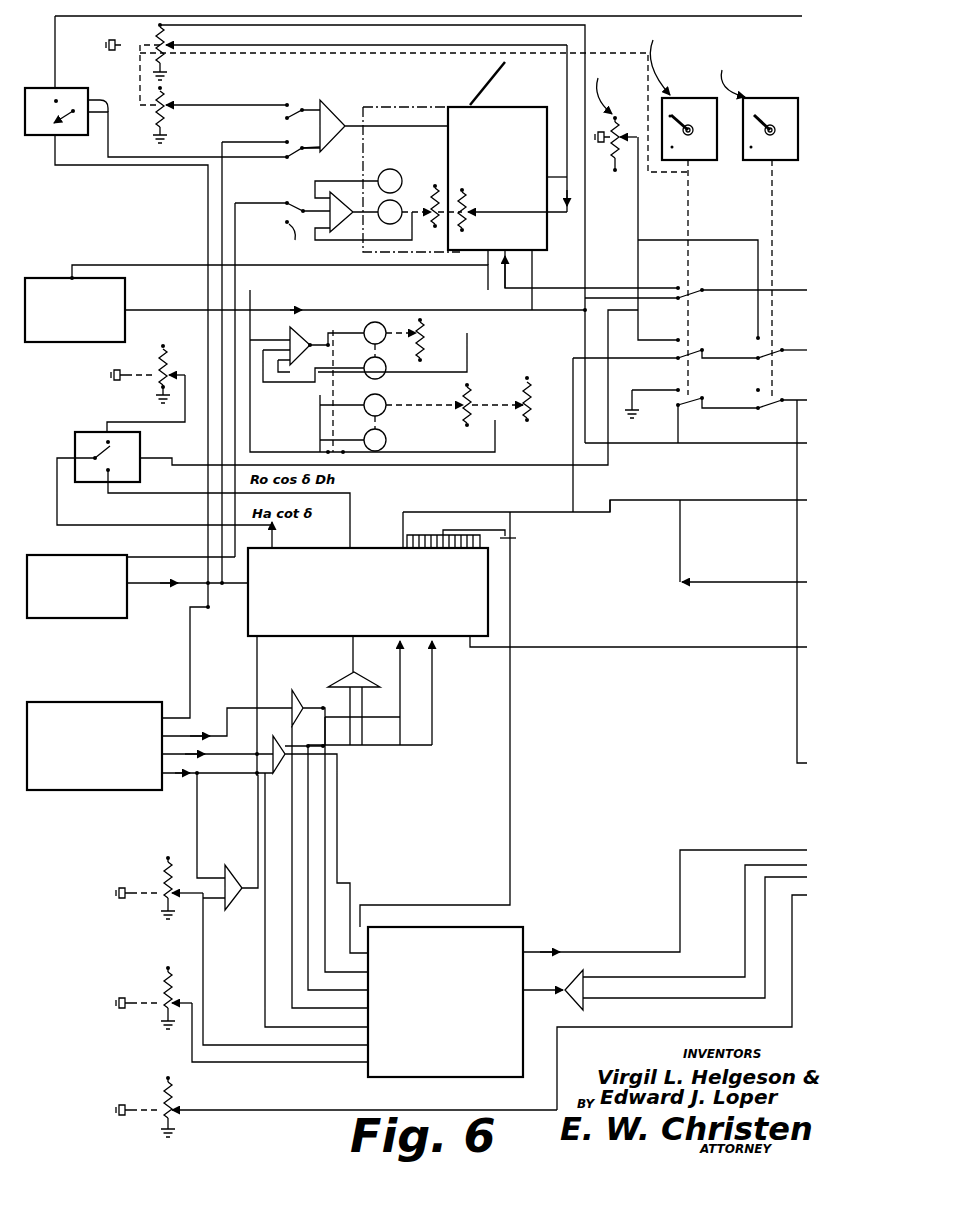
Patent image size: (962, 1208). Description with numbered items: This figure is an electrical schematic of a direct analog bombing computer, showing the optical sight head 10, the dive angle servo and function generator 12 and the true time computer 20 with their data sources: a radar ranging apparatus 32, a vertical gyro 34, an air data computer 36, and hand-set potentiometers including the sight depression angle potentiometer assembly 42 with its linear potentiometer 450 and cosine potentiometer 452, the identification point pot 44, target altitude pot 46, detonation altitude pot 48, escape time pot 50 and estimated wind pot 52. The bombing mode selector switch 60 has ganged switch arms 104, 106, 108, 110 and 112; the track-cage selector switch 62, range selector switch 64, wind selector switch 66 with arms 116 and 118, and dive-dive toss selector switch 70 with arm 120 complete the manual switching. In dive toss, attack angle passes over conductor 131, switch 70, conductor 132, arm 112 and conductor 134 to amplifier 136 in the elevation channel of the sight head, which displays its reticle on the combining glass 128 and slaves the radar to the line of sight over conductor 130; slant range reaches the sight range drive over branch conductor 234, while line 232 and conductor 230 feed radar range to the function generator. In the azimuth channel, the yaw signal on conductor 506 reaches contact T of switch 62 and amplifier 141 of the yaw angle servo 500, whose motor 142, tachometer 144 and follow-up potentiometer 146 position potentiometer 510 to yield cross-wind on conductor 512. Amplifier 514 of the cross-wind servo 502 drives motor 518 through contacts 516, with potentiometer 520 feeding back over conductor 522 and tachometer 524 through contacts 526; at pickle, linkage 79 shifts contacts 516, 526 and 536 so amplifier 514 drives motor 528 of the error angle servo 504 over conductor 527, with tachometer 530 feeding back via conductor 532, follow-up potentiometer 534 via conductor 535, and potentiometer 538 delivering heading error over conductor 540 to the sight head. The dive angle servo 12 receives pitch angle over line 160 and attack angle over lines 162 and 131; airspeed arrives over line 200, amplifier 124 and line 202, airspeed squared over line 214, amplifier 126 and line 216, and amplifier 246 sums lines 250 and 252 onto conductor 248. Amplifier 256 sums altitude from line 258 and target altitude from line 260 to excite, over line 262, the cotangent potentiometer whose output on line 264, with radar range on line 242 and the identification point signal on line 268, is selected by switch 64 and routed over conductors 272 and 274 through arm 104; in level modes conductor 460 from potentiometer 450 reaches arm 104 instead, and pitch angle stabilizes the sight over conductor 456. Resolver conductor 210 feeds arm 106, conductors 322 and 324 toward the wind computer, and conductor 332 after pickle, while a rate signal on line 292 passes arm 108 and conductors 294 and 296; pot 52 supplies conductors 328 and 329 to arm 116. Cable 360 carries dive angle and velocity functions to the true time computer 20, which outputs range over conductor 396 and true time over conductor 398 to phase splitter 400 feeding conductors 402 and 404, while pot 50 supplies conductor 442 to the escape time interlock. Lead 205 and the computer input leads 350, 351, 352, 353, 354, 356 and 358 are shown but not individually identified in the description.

The optical sight head 10 is at (512, 106).
The dive angle servo and function generator 12 is at (492, 588).
The true time computer 20 is at (516, 932).
The radar ranging apparatus 32 is at (114, 266).
The vertical gyro 34 is at (95, 620).
The air data computer 36 is at (116, 700).
The sight depression angle potentiometer assembly 42 is at (136, 85).
The identification point potentiometer 44 is at (168, 358).
The target altitude potentiometer 46 is at (156, 904).
The detonation altitude potentiometer 48 is at (159, 1013).
The escape time potentiometer 50 is at (159, 1123).
The estimated wind potentiometer 52 is at (612, 152).
The bombing mode selector switch 60 is at (697, 162).
The track-cage selector switch 62 is at (300, 240).
The range selector switch 64 is at (140, 450).
The wind selector switch 66 is at (776, 162).
The dive-dive toss selector switch 70 is at (100, 104).
The switch actuating linkage 79 is at (333, 438).
The switch arm 104 is at (688, 290).
The switch arm 106 is at (688, 342).
The switch arm 108 is at (694, 390).
The switch arm 110 is at (300, 102).
The switch arm 112 is at (300, 160).
The switch arm 116 is at (754, 386).
The switch arm 118 is at (770, 410).
The switch arm 120 is at (84, 141).
The phase inverter amplifier 124 is at (285, 688).
The phase inverter amplifier 126 is at (270, 738).
The combining glass 128 is at (490, 78).
The conductor 130 is at (430, 262).
The conductor 131 is at (140, 167).
The conductor 132 is at (150, 157).
The conductor 134 is at (322, 152).
The amplifier 136 is at (326, 100).
The summing and servo amplifier 141 is at (343, 222).
The reversible servo motor 142 is at (400, 204).
The tachometer generator 144 is at (392, 168).
The follow-up potentiometer 146 is at (440, 180).
The line 160 is at (138, 586).
The line 162 is at (210, 609).
The line 200 is at (242, 704).
The line 202 is at (417, 728).
The lead 205 is at (358, 264).
The conductor 210 is at (575, 478).
The line 214 is at (222, 756).
The line 216 is at (418, 748).
The conductor 230 is at (646, 647).
The line 232 is at (152, 304).
The branch conductor 234 is at (533, 291).
The line 242 is at (352, 508).
The summing amplifier 246 is at (378, 676).
The conductor 248 is at (355, 648).
The line 250 is at (328, 686).
The line 252 is at (368, 700).
The summing amplifier 256 is at (236, 905).
The line 258 is at (190, 780).
The line 260 is at (170, 938).
The line 262 is at (262, 640).
The line 264 is at (276, 528).
The line 268 is at (150, 420).
The conductor 272 is at (412, 458).
The conductor 274 is at (774, 291).
The line 292 is at (722, 582).
The conductor 294 is at (718, 420).
The conductor 296 is at (782, 400).
The conductor 322 is at (718, 356).
The conductor 324 is at (782, 350).
The conductor 328 is at (642, 200).
The conductor 329 is at (728, 240).
The conductor 332 is at (618, 498).
The lead 350 is at (350, 812).
The lead 351 is at (352, 786).
The lead 352 is at (335, 852).
The lead 353 is at (272, 975).
The lead 354 is at (272, 1002).
The lead 356 is at (206, 945).
The lead 358 is at (216, 1066).
The cable 360 is at (512, 727).
The conductor 396 is at (649, 948).
The conductor 398 is at (544, 992).
The phase splitter 400 is at (590, 978).
The conductor 402 is at (680, 976).
The conductor 404 is at (672, 1005).
The conductor 442 is at (284, 1110).
The linear potentiometer 450 is at (174, 48).
The cosine potentiometer 452 is at (174, 108).
The conductor 456 is at (220, 507).
The conductor 460 is at (630, 286).
The yaw angle servo 500 is at (356, 256).
The cross-wind servo 502 is at (350, 325).
The error angle servo 504 is at (348, 410).
The conductor 506 is at (250, 200).
The potentiometer 510 is at (474, 211).
The conductor 512 is at (286, 290).
The summing and servo amplifier 514 is at (294, 324).
The switch contacts 516 is at (332, 332).
The servo motor 518 is at (389, 320).
The potentiometer 520 is at (404, 354).
The conductor 522 is at (467, 350).
The tachometer generator 524 is at (392, 372).
The switch contacts 526 is at (326, 380).
The conductor 527 is at (328, 382).
The servo motor 528 is at (396, 410).
The tachometer generator 530 is at (388, 440).
The conductor 532 is at (350, 456).
The follow-up potentiometer 534 is at (444, 428).
The conductor 535 is at (486, 455).
The switch contacts 536 is at (342, 458).
The potentiometer 538 is at (532, 412).
The conductor 540 is at (541, 317).